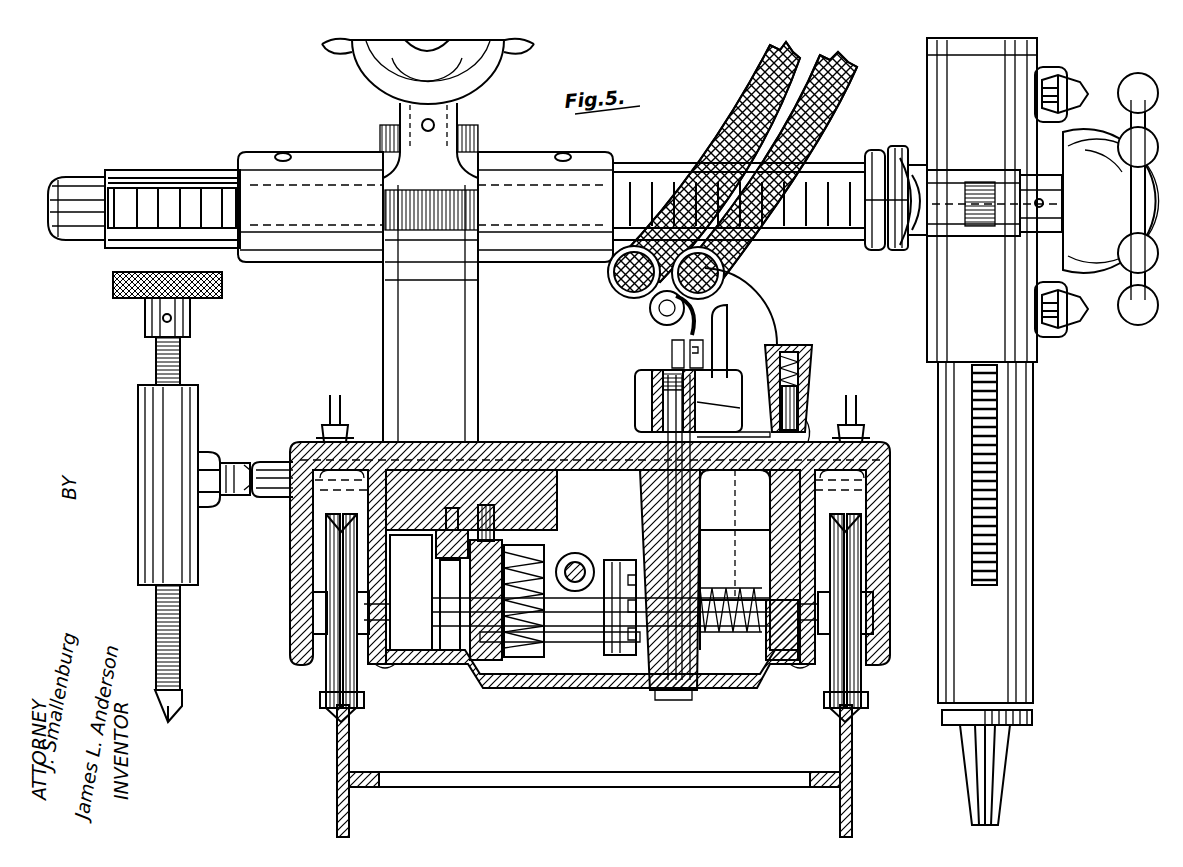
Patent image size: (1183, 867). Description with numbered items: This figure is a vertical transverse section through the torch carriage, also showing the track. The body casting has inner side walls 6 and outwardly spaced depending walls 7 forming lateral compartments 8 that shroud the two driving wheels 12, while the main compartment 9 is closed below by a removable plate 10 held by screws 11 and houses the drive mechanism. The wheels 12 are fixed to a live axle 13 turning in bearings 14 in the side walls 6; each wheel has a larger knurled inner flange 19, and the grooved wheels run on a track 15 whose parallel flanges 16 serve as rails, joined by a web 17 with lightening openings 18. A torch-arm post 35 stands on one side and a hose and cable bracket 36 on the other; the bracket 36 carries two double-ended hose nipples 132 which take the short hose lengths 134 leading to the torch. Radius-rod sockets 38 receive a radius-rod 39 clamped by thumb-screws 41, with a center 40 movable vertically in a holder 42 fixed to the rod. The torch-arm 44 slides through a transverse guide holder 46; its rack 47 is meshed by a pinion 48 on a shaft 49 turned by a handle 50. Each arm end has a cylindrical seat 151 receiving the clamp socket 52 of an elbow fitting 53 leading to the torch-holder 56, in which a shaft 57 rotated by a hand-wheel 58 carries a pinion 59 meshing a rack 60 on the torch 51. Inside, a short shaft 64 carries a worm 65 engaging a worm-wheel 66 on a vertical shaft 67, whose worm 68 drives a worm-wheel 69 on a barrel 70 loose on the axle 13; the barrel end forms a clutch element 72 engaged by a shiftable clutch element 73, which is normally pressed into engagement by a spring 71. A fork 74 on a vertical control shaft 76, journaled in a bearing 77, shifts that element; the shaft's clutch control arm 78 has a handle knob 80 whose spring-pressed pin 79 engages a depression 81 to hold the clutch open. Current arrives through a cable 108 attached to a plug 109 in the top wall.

The side walls 6 is at (398, 548).
The depending walls 7 is at (290, 590).
The lateral compartments 8 is at (312, 553).
The main compartment 9 is at (609, 513).
The removable plate 10 is at (735, 674).
The screws 11 is at (378, 670).
The driving wheels 12 is at (318, 700).
The live axle 13 is at (445, 640).
The bearings 14 is at (408, 650).
The track 15 is at (335, 775).
The parallel flanges 16 is at (349, 735).
The web 17 is at (365, 784).
The openings 18 is at (610, 772).
The inner flange 19 is at (360, 716).
The torch-arm post 35 is at (470, 420).
The hose and cable bracket 36 is at (768, 306).
The radius-rod sockets 38 is at (752, 490).
The radius-rod 39 is at (266, 462).
The center 40 is at (175, 715).
The thumb-screws 41 is at (320, 428).
The holder 42 is at (138, 540).
The torch-arm 44 is at (650, 172).
The transverse guide holder 46 is at (510, 165).
The rack 47 is at (172, 185).
The pinion 48 is at (420, 232).
The shaft 49 is at (398, 162).
The handle 50 is at (360, 62).
The torch 51 is at (1034, 590).
The clamp socket 52 is at (868, 250).
The elbow fitting 53 is at (922, 165).
The torch-holder 56 is at (927, 312).
The shaft 57 is at (1042, 190).
The hand-wheel 58 is at (1135, 322).
The pinion 59 is at (980, 182).
The rack 60 is at (1000, 466).
The short shaft 64 is at (575, 553).
The worm 65 is at (582, 562).
The worm-wheel 66 is at (540, 545).
The vertical shaft 67 is at (528, 660).
The worm 68 is at (508, 640).
The worm-wheel 69 is at (578, 660).
The barrel 70 is at (612, 640).
The spring 71 is at (748, 650).
The clutch element 72 is at (618, 562).
The shiftable clutch element 73 is at (648, 640).
The fork 74 is at (700, 650).
The vertical control shaft 76 is at (668, 466).
The bearing 77 is at (700, 516).
The clutch control arm 78 is at (730, 468).
The spring-pressed pin 79 is at (800, 400).
The handle knob 80 is at (812, 352).
The depression 81 is at (812, 440).
The cable 108 is at (658, 322).
The plug 109 is at (636, 393).
The double-ended hose nipples 132 is at (618, 292).
The short hose lengths 134 is at (768, 62).
The cylindrical seats 151 is at (75, 238).